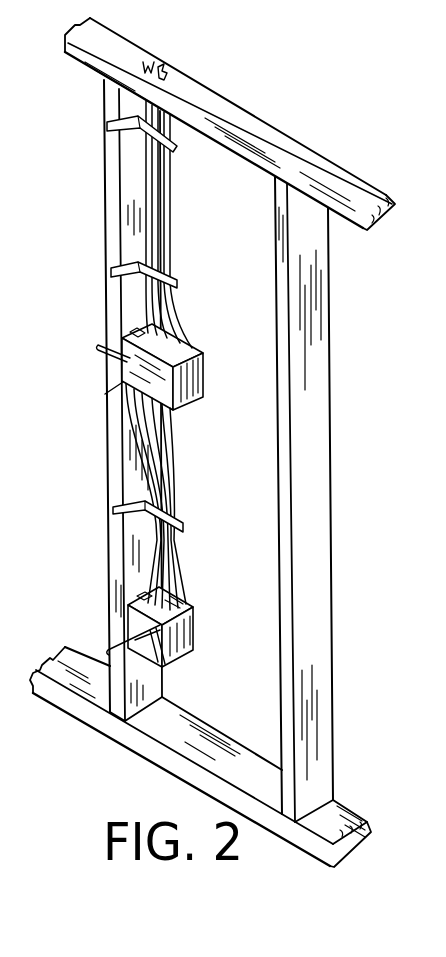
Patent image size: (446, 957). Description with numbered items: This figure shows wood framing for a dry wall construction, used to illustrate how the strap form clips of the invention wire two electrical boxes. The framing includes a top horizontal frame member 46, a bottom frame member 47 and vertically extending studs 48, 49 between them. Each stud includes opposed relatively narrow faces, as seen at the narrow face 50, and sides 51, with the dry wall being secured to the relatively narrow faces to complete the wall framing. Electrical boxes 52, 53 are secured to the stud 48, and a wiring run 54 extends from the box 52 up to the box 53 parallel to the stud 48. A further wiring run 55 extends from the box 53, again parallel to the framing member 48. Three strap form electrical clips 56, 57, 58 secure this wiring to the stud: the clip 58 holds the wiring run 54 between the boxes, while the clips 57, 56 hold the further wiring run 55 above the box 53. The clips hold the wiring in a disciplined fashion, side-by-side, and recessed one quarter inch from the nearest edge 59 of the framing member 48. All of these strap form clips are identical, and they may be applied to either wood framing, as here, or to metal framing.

The top horizontal frame member 46 is at (200, 84).
The bottom frame member 47 is at (132, 738).
The stud 48 is at (108, 480).
The stud 49 is at (330, 397).
The narrow face 50 is at (282, 373).
The side 51 is at (317, 347).
The electrical box 52 is at (183, 625).
The electrical box 53 is at (203, 377).
The wiring run 54 is at (180, 491).
The wiring run 55 is at (171, 217).
The strap form electrical clip 56 is at (128, 140).
The strap form electrical clip 57 is at (132, 285).
The strap form electrical clip 58 is at (135, 520).
The nearest edge 59 is at (128, 177).